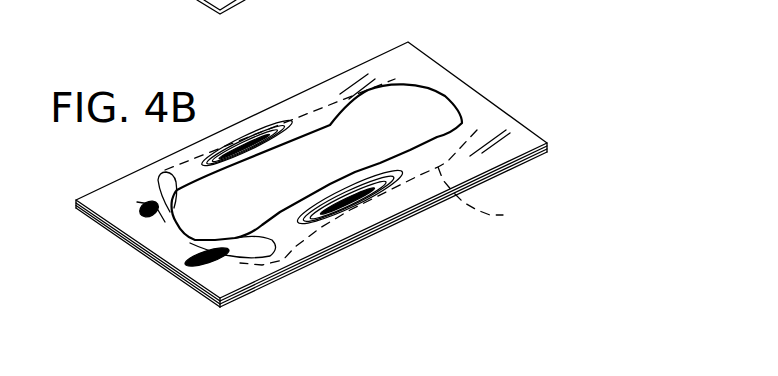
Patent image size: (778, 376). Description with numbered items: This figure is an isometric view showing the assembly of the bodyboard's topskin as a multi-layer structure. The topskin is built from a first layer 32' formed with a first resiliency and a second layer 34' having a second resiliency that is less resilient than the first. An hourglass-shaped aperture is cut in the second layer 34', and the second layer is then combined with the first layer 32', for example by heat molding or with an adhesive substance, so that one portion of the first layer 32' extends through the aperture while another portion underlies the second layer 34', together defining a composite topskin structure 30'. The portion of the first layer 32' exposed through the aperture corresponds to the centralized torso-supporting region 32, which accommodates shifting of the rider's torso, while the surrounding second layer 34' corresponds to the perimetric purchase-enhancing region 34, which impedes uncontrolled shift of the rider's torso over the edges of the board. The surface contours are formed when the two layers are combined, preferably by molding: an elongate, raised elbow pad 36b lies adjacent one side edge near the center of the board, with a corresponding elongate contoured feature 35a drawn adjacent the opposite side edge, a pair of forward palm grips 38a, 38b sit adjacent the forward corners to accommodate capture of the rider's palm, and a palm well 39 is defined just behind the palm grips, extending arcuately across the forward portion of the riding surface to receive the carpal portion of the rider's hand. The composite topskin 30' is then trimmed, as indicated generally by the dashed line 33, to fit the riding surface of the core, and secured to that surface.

The composite topskin structure 30' is at (347, 174).
The torso-supporting region 32 is at (311, 170).
The first layer 32' is at (363, 141).
The dashed line 33 is at (491, 200).
The purchase-enhancing region 34 is at (358, 211).
The second layer 34' is at (337, 86).
The elongated slot 35a is at (357, 200).
The elbow pad 36b is at (243, 140).
The forward palm grip 38a is at (187, 262).
The forward palm grip 38b is at (140, 210).
The palm well 39 is at (240, 254).